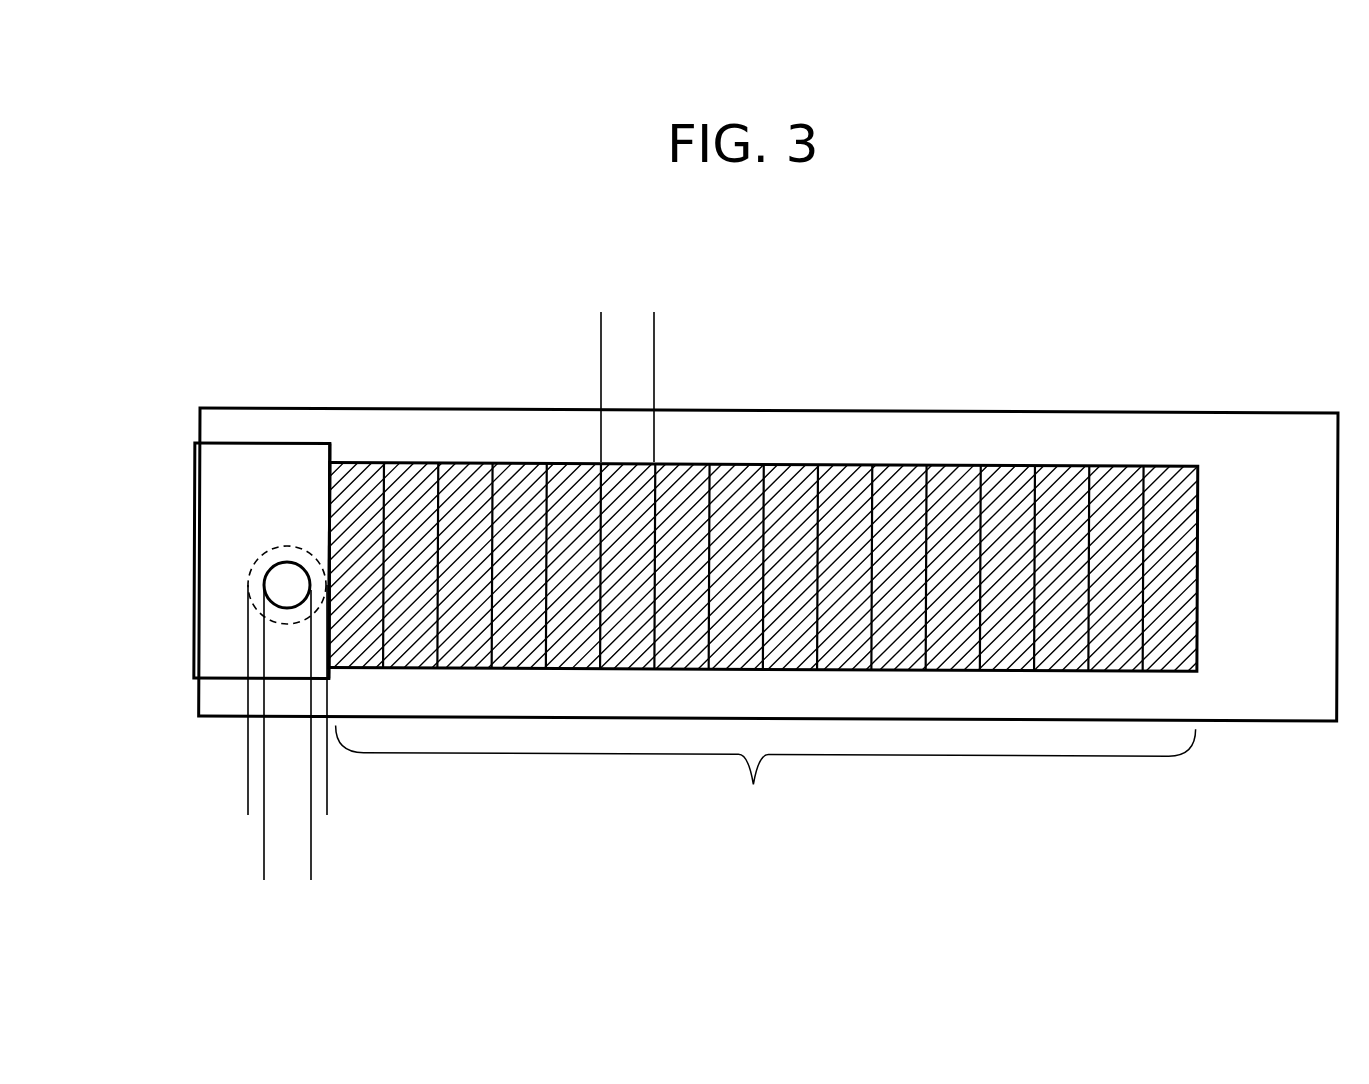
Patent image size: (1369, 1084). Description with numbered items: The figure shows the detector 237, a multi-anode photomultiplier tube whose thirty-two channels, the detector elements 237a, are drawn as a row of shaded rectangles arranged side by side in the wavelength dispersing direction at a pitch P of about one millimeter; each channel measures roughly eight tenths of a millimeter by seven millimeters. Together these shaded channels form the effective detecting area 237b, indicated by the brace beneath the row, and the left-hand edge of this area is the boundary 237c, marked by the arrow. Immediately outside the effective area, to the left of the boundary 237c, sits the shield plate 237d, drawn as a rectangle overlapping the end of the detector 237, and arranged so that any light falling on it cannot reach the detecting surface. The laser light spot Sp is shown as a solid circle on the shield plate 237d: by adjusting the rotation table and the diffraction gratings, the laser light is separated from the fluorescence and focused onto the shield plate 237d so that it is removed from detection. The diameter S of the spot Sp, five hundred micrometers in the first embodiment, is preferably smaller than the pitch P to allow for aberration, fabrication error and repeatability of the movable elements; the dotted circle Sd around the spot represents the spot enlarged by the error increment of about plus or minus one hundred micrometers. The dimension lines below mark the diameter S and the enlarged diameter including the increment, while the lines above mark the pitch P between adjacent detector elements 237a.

The detector 237 is at (1210, 442).
The detector elements 237a is at (1002, 465).
The detecting area 237b is at (762, 643).
The boundary of the detection area 237c is at (320, 502).
The shield plate 237d is at (195, 560).
The spot of the laser light Sp is at (283, 563).
The dotted circle Sd is at (247, 577).
The pitch P is at (745, 321).
The diameter of the spot S is at (385, 866).